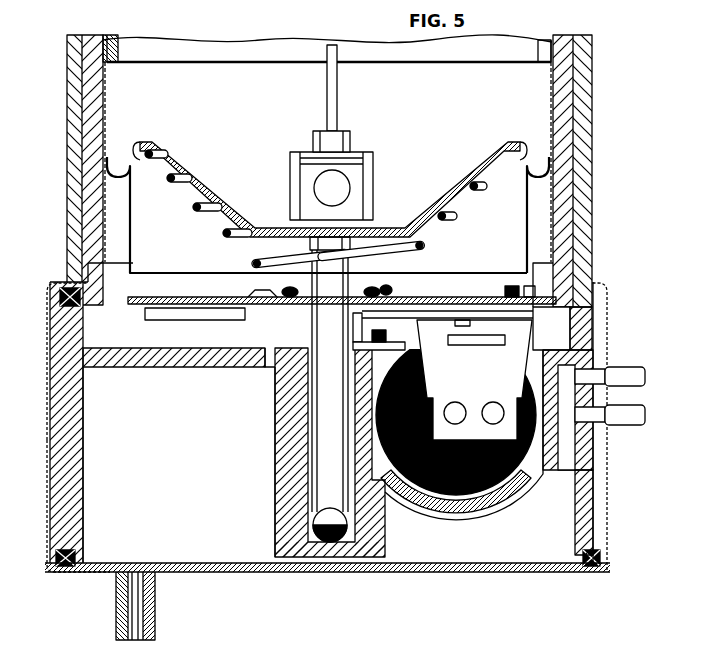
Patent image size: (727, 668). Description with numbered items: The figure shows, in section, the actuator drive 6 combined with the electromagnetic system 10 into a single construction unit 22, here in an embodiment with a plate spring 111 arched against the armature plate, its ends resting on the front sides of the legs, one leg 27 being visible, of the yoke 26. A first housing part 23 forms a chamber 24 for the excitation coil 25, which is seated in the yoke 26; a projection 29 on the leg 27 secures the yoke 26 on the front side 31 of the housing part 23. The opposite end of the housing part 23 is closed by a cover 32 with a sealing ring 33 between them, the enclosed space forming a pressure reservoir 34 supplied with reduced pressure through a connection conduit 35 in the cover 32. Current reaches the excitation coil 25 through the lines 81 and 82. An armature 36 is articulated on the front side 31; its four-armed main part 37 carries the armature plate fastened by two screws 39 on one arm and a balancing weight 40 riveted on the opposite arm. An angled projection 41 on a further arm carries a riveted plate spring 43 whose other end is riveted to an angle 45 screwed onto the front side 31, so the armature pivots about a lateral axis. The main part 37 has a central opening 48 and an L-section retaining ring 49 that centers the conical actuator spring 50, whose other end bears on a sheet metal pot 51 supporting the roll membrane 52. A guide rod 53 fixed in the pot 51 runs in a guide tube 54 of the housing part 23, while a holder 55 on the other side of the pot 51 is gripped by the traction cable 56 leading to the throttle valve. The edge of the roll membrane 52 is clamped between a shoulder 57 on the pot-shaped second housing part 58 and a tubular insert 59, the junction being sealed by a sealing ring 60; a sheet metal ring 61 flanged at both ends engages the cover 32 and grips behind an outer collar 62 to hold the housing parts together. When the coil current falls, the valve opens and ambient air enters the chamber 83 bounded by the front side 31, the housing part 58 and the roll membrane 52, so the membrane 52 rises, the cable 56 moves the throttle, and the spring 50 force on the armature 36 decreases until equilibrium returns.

The actuator drive 6 is at (405, 172).
The electromagnetic system 10 is at (548, 322).
The construction unit 22 is at (598, 254).
The first housing part 23 is at (580, 530).
The chamber 24 is at (500, 485).
The excitation coil 25 is at (482, 500).
The yoke 26 is at (458, 498).
The leg 27 is at (474, 394).
The projection 29 is at (458, 342).
The front side 31 is at (190, 362).
The cover 32 is at (175, 575).
The sealing ring 33 is at (75, 570).
The pressure reservoir 34 is at (230, 545).
The connection conduit 35 is at (118, 615).
The armature 36 is at (190, 290).
The main part 37 is at (472, 311).
The screws 39 is at (506, 285).
The balancing weight 40 is at (150, 318).
The angled projection 41 is at (427, 262).
The plate spring 43 is at (352, 335).
The angle 45 is at (393, 293).
The central opening 48 is at (270, 365).
The retaining ring 49 is at (298, 304).
The actuator spring 50 is at (172, 180).
The sheet metal pot 51 is at (128, 192).
The roll membrane 52 is at (100, 104).
The guide rod 53 is at (318, 456).
The guide tube 54 is at (330, 558).
The holder 55 is at (297, 184).
The traction cable 56 is at (327, 88).
The shoulder 57 is at (100, 36).
The second housing part 58 is at (78, 64).
The tubular insert 59 is at (78, 243).
The sealing ring 60 is at (80, 300).
The sheet metal ring 61 is at (47, 566).
The outer collar 62 is at (62, 281).
The line 81 is at (624, 372).
The line 82 is at (625, 428).
The chamber 83 is at (500, 202).
The plate spring 111 is at (460, 323).